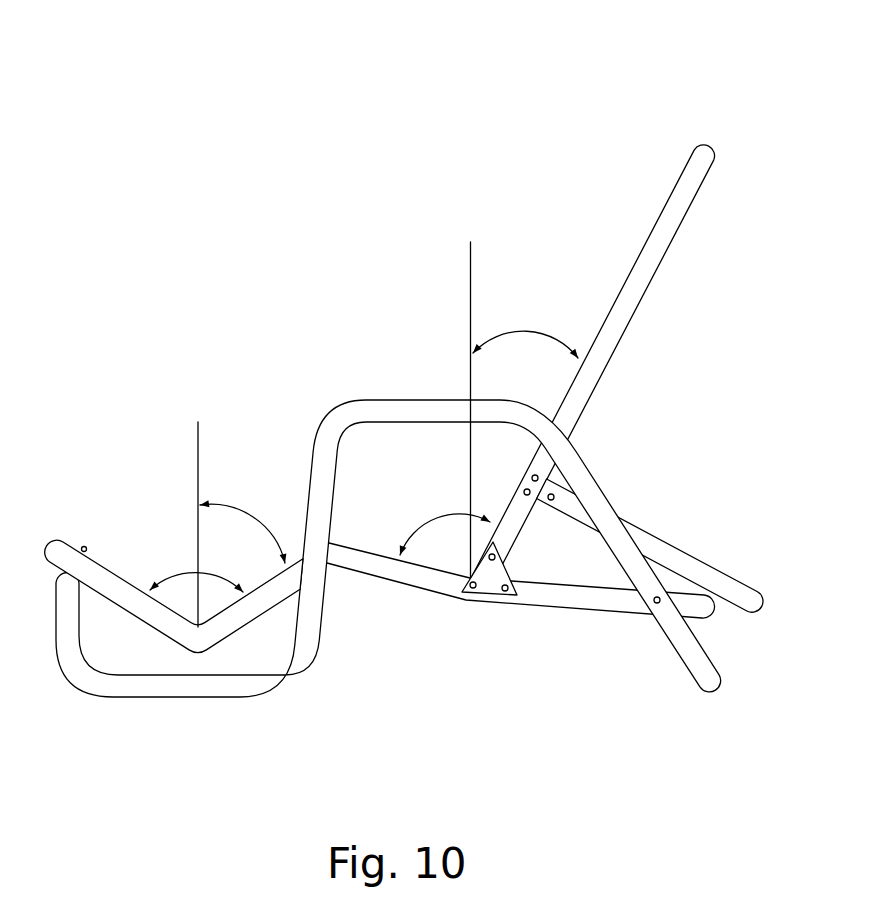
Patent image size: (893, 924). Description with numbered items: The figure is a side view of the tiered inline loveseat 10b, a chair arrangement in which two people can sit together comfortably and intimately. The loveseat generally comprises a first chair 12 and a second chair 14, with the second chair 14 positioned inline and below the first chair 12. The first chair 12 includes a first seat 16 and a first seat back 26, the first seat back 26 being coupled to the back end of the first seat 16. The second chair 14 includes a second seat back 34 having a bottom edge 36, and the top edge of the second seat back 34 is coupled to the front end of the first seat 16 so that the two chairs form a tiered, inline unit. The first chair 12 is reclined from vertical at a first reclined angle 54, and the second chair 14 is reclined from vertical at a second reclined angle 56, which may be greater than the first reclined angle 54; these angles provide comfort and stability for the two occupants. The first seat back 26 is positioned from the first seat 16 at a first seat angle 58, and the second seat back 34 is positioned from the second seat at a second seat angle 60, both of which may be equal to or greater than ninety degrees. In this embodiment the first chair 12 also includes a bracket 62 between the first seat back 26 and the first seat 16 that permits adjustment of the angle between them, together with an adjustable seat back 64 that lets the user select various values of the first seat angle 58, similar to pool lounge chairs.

The tiered inline loveseat 10b is at (147, 136).
The first chair 12 is at (470, 227).
The second chair 14 is at (167, 430).
The first seat 16 is at (423, 577).
The first seat back 26 is at (663, 228).
The second seat back 34 is at (247, 610).
The bottom edge 36 is at (110, 565).
The first reclined angle 54 is at (527, 332).
The second reclined angle 56 is at (240, 508).
The first seat angle 58 is at (427, 517).
The second seat angle 60 is at (188, 568).
The bracket 62 is at (503, 573).
The adjustable seat back 64 is at (673, 510).